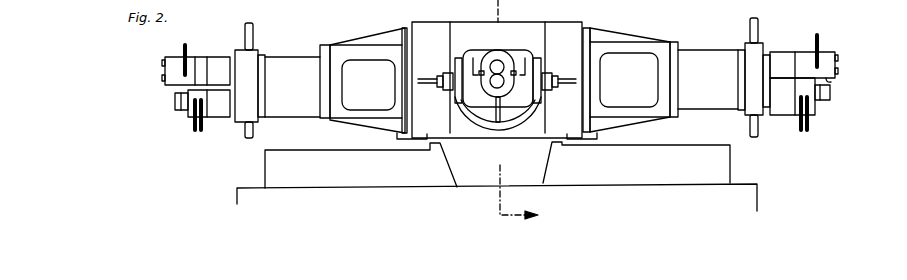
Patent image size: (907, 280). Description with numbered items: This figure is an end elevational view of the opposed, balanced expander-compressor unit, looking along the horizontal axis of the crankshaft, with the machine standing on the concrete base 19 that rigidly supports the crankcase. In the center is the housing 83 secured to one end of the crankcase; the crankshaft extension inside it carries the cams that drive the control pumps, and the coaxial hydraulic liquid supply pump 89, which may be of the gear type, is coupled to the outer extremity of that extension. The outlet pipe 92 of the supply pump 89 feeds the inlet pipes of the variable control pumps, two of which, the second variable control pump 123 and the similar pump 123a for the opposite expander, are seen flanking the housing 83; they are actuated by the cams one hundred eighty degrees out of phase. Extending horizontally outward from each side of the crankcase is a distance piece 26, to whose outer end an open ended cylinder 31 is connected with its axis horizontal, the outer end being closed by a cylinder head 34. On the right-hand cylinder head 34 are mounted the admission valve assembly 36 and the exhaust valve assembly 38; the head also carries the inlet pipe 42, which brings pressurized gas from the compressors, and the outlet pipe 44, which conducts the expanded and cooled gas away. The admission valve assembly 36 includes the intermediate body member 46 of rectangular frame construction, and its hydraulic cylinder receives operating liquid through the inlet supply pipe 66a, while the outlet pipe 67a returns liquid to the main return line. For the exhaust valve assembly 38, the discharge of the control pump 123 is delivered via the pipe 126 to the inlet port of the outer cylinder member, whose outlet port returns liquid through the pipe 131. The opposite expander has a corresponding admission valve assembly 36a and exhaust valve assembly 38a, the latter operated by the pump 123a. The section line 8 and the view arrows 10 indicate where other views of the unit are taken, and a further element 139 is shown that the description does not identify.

The section line 8- 8 is at (508, 112).
The window / viewing direction 10 is at (392, 80).
The concrete base 19 is at (735, 170).
The distance piece 26 is at (613, 35).
The open ended cylinder 31 is at (698, 53).
The cylinder head 34 is at (748, 77).
The admission valve assembly 36 is at (831, 98).
The admission valve assembly 36a is at (174, 106).
The exhaust valve assembly 38 is at (836, 52).
The exhaust valve assembly 38a is at (176, 59).
The inlet pipe 42 is at (751, 124).
The outlet pipe 44 is at (751, 24).
The intermediate body member 46 is at (791, 114).
The inlet supply pipe 66a is at (800, 123).
The outlet pipe 67a is at (809, 119).
The housing 83 is at (481, 50).
The hydraulic liquid supply pump 89 is at (502, 60).
The outlet pipe 92 is at (522, 60).
The second variable control pump 123 is at (549, 77).
The variable control pump 123a is at (433, 73).
The pipe 126 is at (831, 82).
The pipe 131 is at (813, 43).
The block 139 is at (780, 55).